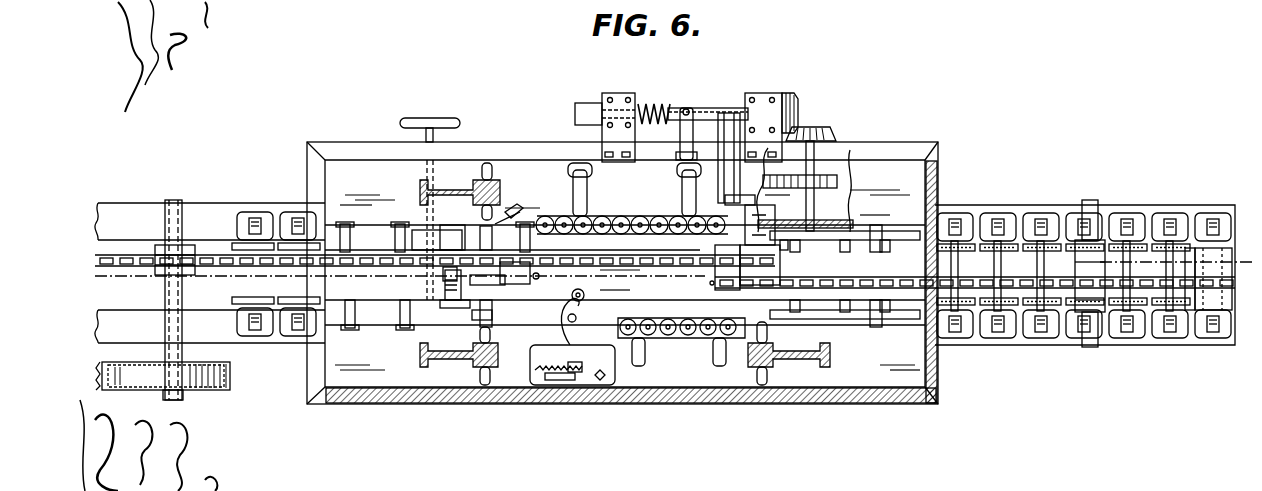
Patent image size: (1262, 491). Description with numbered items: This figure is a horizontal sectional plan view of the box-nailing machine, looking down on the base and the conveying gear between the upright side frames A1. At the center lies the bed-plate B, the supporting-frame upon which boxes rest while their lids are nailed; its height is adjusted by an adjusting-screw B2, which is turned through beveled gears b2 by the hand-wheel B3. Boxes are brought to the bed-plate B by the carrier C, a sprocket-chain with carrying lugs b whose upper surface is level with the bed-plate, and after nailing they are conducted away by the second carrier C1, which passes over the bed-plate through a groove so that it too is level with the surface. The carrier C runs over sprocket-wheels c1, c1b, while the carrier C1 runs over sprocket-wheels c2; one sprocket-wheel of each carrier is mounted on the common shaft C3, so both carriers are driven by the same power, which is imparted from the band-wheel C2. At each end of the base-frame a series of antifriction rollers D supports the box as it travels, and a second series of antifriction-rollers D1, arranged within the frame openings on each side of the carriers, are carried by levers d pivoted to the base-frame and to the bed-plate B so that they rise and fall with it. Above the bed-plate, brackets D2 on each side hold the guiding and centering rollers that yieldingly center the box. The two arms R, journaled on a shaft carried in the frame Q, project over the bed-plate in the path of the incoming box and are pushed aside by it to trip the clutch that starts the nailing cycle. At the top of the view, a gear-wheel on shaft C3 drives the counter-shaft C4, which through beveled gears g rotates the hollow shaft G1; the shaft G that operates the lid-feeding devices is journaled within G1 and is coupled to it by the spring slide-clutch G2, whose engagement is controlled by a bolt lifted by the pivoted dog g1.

The upright side frame A1 is at (455, 367).
The hand-wheel B3 is at (425, 118).
The adjusting-screw B2 is at (462, 285).
The beveled gears b2 is at (442, 278).
The bed-plate B is at (684, 273).
The pin b is at (514, 244).
The carrier C is at (1075, 262).
The carrier C1 is at (380, 266).
The band-wheel C2 is at (215, 388).
The shaft C3 is at (775, 328).
The counter-shaft C4 is at (822, 200).
The sprocket-wheels c1 is at (1135, 284).
The sprocket-wheels c1b is at (712, 285).
The sprocket-wheels c2 is at (815, 264).
The antifriction rollers D is at (300, 240).
The antifriction-rollers D1 is at (880, 326).
The brackets D2 is at (635, 216).
The levers d is at (382, 236).
The shaft G is at (650, 108).
The hollow shaft G1 is at (732, 110).
The spring slide-clutch G2 is at (692, 110).
The beveled gears g is at (795, 103).
The pivoted dog g1 is at (820, 128).
The frame Q is at (572, 365).
The arms R is at (578, 316).